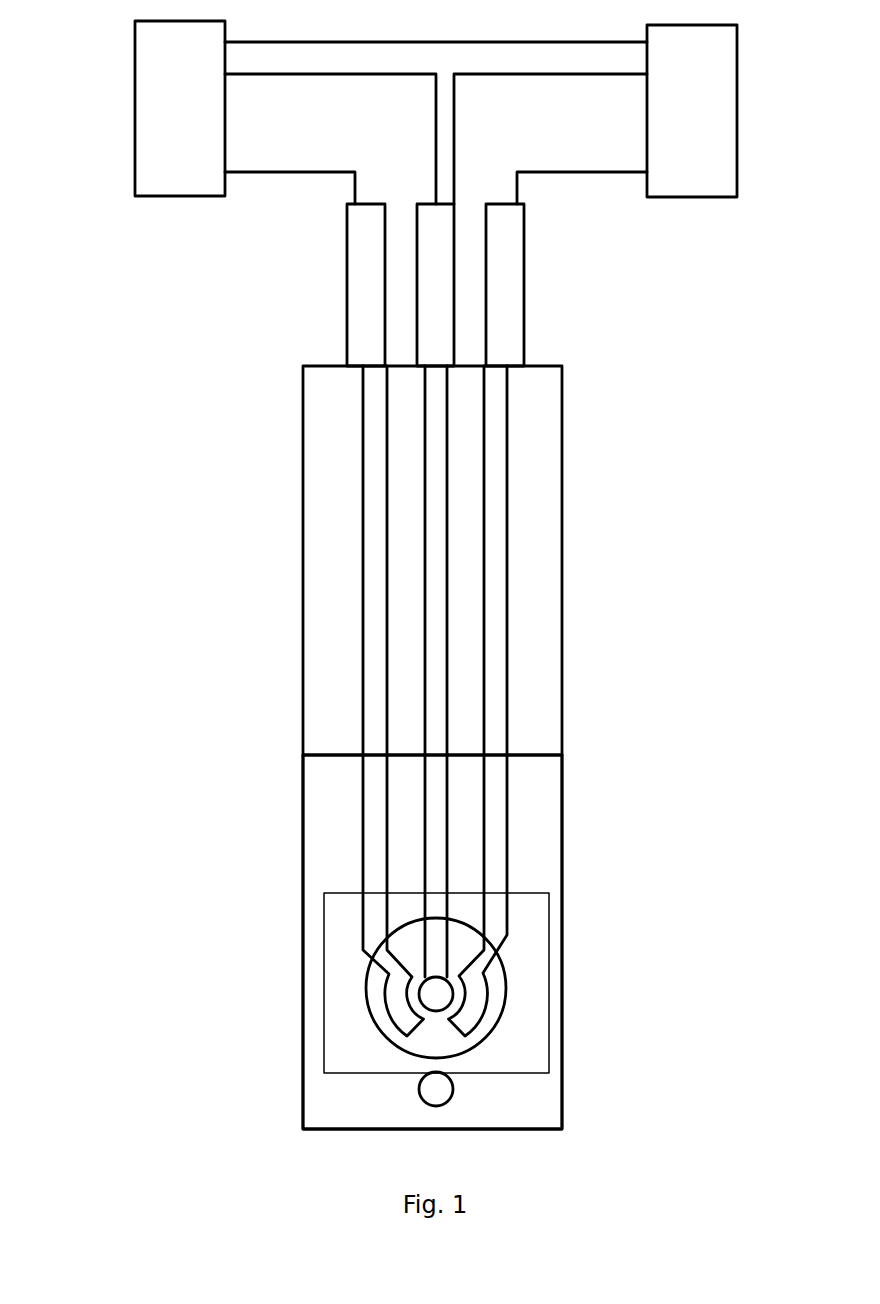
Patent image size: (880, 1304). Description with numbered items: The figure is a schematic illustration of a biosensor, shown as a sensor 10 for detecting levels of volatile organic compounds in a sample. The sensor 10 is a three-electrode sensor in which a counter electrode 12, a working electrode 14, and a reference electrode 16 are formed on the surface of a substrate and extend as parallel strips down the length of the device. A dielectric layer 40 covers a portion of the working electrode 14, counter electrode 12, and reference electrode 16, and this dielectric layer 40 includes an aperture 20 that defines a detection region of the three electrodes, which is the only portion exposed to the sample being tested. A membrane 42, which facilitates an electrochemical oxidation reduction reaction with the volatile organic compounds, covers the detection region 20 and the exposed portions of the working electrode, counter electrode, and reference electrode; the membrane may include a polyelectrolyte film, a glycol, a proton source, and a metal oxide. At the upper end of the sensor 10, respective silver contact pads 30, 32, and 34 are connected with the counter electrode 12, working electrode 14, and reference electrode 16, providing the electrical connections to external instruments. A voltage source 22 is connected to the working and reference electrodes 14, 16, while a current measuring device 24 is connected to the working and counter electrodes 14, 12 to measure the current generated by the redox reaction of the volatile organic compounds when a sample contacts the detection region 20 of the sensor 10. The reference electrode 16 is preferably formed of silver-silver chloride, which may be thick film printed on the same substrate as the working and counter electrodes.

The sensor 10 is at (616, 665).
The counter electrode 12 is at (362, 863).
The working electrode 14 is at (433, 867).
The reference electrode 16 is at (497, 818).
The aperture 20 is at (423, 1046).
The voltage source 22 is at (737, 93).
The current measuring device 24 is at (135, 145).
The silver contact pad 30 is at (387, 203).
The silver contact pad 32 is at (430, 203).
The silver contact pad 34 is at (498, 203).
The dielectric layer 40 is at (562, 988).
The membrane 42 is at (549, 912).